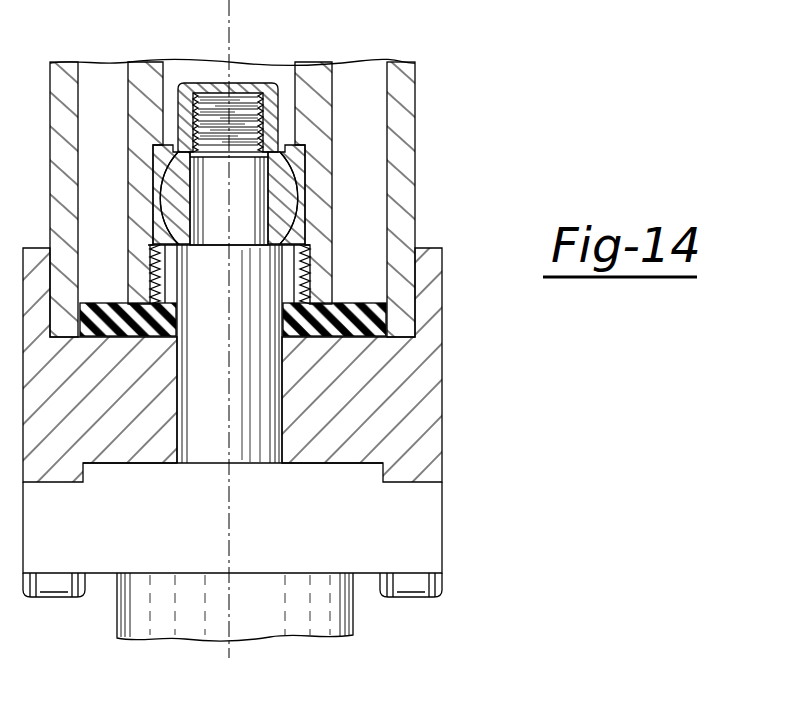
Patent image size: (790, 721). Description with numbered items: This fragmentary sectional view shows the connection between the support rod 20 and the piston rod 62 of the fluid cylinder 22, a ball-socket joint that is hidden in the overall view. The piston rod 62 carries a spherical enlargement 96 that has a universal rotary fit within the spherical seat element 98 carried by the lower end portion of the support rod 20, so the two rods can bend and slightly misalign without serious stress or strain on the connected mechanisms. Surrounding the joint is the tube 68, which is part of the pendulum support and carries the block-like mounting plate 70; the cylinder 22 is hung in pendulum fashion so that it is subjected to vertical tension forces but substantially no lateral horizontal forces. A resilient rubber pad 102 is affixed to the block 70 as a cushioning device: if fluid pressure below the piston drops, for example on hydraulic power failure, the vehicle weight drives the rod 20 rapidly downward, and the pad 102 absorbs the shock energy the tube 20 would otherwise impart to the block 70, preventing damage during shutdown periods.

The support rod 20 is at (333, 87).
The tube 68 is at (418, 118).
The spherical seat element 98 is at (157, 195).
The spherical enlargement 96 is at (290, 196).
The resilient rubber pad 102 is at (434, 322).
The block-like mounting plate 70 is at (438, 401).
The fluid cylinder 22 is at (442, 512).
The piston rod 62 is at (212, 450).